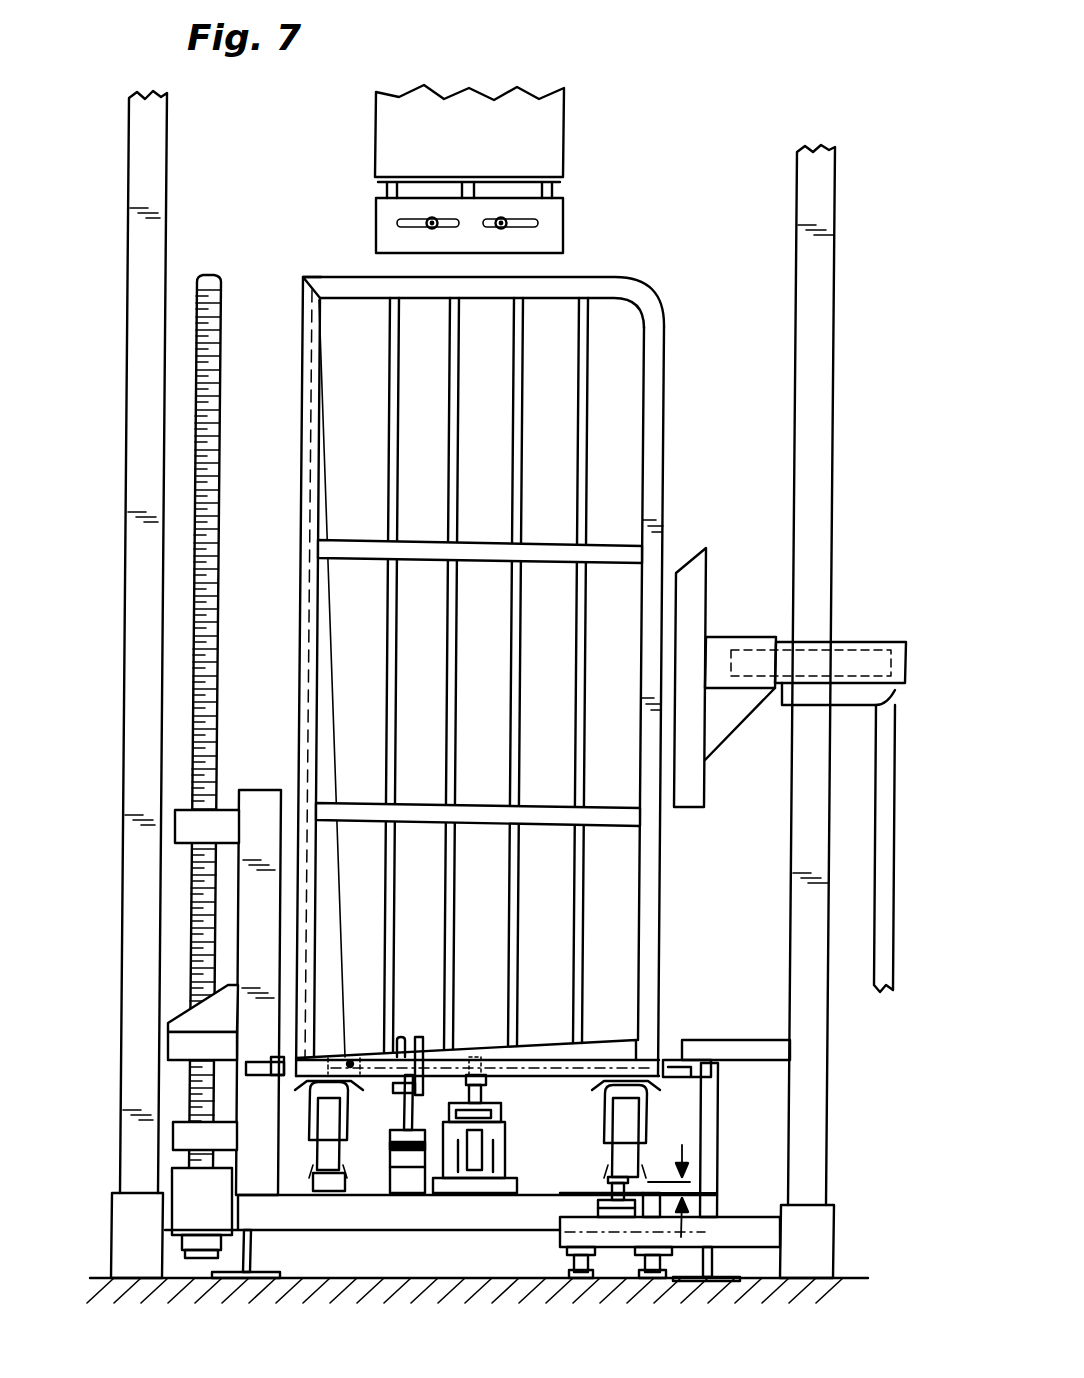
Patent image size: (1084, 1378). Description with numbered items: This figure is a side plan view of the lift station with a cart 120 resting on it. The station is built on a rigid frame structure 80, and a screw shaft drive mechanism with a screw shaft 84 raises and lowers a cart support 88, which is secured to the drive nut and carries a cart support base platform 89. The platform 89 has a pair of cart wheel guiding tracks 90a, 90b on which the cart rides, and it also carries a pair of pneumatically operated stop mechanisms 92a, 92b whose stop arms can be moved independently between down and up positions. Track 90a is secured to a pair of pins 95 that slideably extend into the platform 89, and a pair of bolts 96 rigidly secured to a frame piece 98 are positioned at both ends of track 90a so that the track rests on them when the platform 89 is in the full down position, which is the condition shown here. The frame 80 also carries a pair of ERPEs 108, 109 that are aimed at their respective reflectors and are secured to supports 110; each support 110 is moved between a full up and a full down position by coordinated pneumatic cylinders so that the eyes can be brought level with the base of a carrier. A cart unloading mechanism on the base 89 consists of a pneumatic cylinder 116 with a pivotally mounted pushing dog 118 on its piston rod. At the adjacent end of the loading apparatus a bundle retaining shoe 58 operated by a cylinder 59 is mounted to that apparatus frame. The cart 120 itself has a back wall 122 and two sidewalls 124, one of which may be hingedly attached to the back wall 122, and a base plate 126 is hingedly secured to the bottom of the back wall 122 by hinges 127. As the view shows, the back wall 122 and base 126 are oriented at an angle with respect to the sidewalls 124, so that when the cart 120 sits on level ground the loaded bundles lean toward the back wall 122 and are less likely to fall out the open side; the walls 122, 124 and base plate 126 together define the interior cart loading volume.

The bundle retaining shoe 58 is at (693, 602).
The cylinder 59 is at (841, 665).
The rigid frame structure 80 is at (122, 684).
The screw shaft 84 is at (216, 408).
The cart support 88 is at (242, 908).
The cart support base platform 89 is at (358, 1222).
The cart wheel guiding track 90a is at (600, 1168).
The cart wheel guiding track 90b is at (304, 1172).
The pneumatically operated stop mechanism 92a is at (403, 1112).
The pneumatically operated stop mechanism 92b is at (401, 1035).
The pin 95 is at (702, 1188).
The bolt 96 is at (600, 1195).
The frame piece 98 is at (551, 1237).
The ERPE 108 is at (430, 230).
The ERPE 109 is at (503, 226).
The support 110 is at (473, 228).
The pneumatic cylinder 116 is at (471, 1172).
The pushing dog 118 is at (483, 1080).
The cart 120 is at (491, 643).
The back wall 122 is at (317, 762).
The sidewall 124 is at (656, 492).
The base plate 126 is at (593, 1050).
The hinge 127 is at (350, 1063).